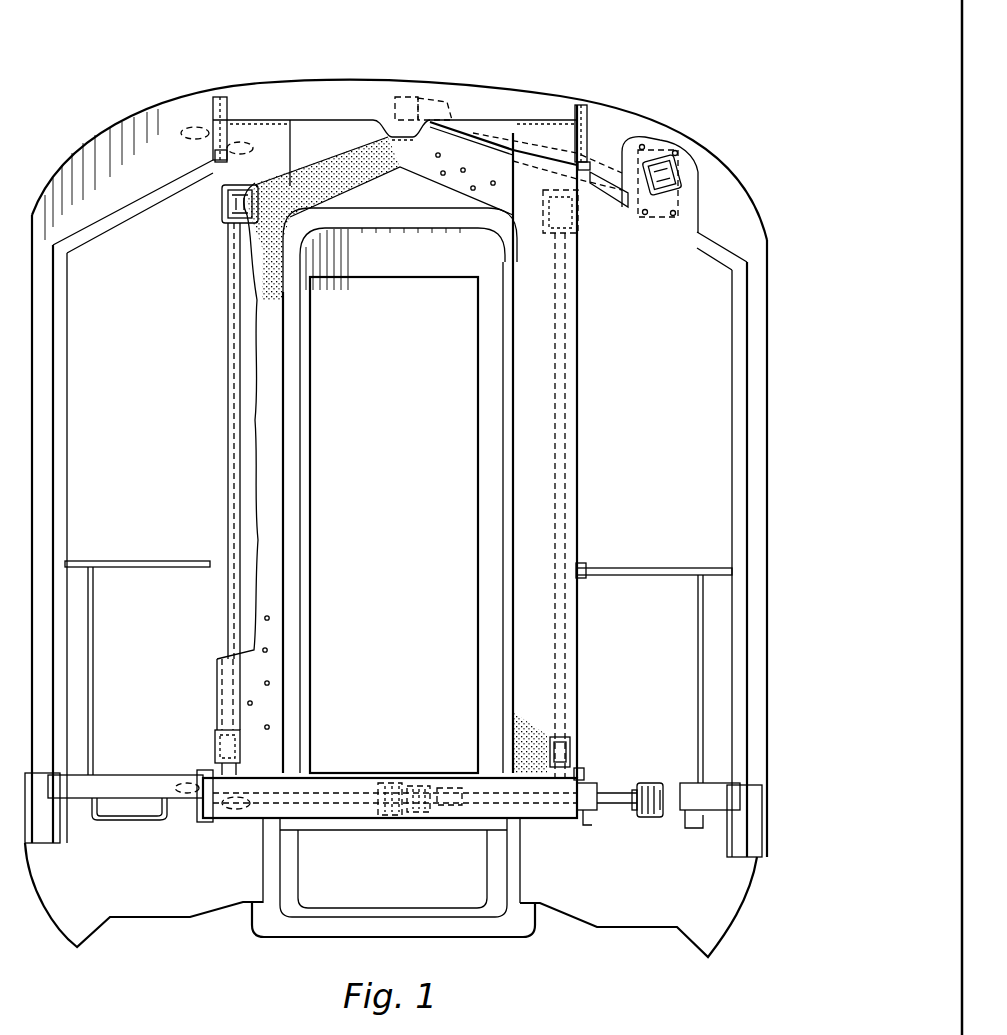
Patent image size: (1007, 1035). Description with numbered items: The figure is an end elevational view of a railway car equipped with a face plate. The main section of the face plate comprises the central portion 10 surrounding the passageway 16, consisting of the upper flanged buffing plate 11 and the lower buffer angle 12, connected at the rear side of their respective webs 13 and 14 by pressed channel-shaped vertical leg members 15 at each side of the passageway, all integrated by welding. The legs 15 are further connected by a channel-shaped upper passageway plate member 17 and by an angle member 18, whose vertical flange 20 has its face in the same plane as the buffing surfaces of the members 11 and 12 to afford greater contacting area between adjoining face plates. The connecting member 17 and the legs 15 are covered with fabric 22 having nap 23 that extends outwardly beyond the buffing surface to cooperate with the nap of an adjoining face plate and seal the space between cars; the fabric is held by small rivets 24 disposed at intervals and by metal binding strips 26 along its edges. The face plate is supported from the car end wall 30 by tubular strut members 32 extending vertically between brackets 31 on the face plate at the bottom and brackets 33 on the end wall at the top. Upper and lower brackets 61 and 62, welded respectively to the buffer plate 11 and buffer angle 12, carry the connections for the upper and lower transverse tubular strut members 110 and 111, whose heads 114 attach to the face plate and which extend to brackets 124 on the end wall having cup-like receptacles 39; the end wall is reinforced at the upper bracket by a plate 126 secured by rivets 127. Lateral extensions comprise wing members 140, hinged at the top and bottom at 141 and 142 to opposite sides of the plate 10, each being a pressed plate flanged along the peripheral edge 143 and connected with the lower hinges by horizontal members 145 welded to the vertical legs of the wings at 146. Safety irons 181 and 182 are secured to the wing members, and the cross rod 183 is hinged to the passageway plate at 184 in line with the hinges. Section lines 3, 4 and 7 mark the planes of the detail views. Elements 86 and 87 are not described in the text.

The section line 3- 3 is at (688, 130).
The section line 4- 4 is at (240, 178).
The section line 7- 7 is at (407, 120).
The central portion of the face plate 10 is at (503, 394).
The upper flanged buffing plate 11 is at (355, 84).
The lower buffer angle 12 is at (260, 822).
The web of the buffing plate 13 is at (519, 88).
The web of the buffer angle 14 is at (326, 800).
The vertical leg members 15 is at (265, 477).
The passageway 16 is at (394, 525).
The upper passageway plate member 17 is at (352, 157).
The angle member 18 is at (435, 229).
The vertical flange of the angle 20 is at (370, 215).
The fabric 22 is at (275, 285).
The nap 23 is at (300, 182).
The small rivets 24 is at (471, 190).
The metal binding strips 26 is at (292, 162).
The car end wall 30 is at (396, 337).
The lower brackets 31 is at (217, 746).
The tubular strut members 32 is at (228, 396).
The upper brackets 33 is at (228, 212).
The cup-like receptacles 39 is at (660, 166).
The upper bracket 61 is at (427, 98).
The lower bracket 62 is at (416, 786).
The hanger 86 is at (395, 100).
The spring 87 is at (380, 800).
The upper transverse tubular strut member 110 is at (630, 160).
The lower transverse tubular strut member 111 is at (613, 793).
The heads 114 is at (450, 788).
The brackets 124 is at (680, 157).
The plate 126 is at (680, 195).
The rivets 127 is at (673, 217).
The wing members 140 is at (67, 465).
The upper hinges 141 is at (215, 108).
The lower hinges 142 is at (203, 817).
The peripheral edge 143 is at (25, 347).
The horizontal members 145 is at (145, 790).
The weld connection 146 is at (28, 843).
The safety iron 181 is at (112, 822).
The safety iron 182 is at (93, 641).
The cross rod 183 is at (165, 561).
The hinge connection of the cross rod 184 is at (585, 565).